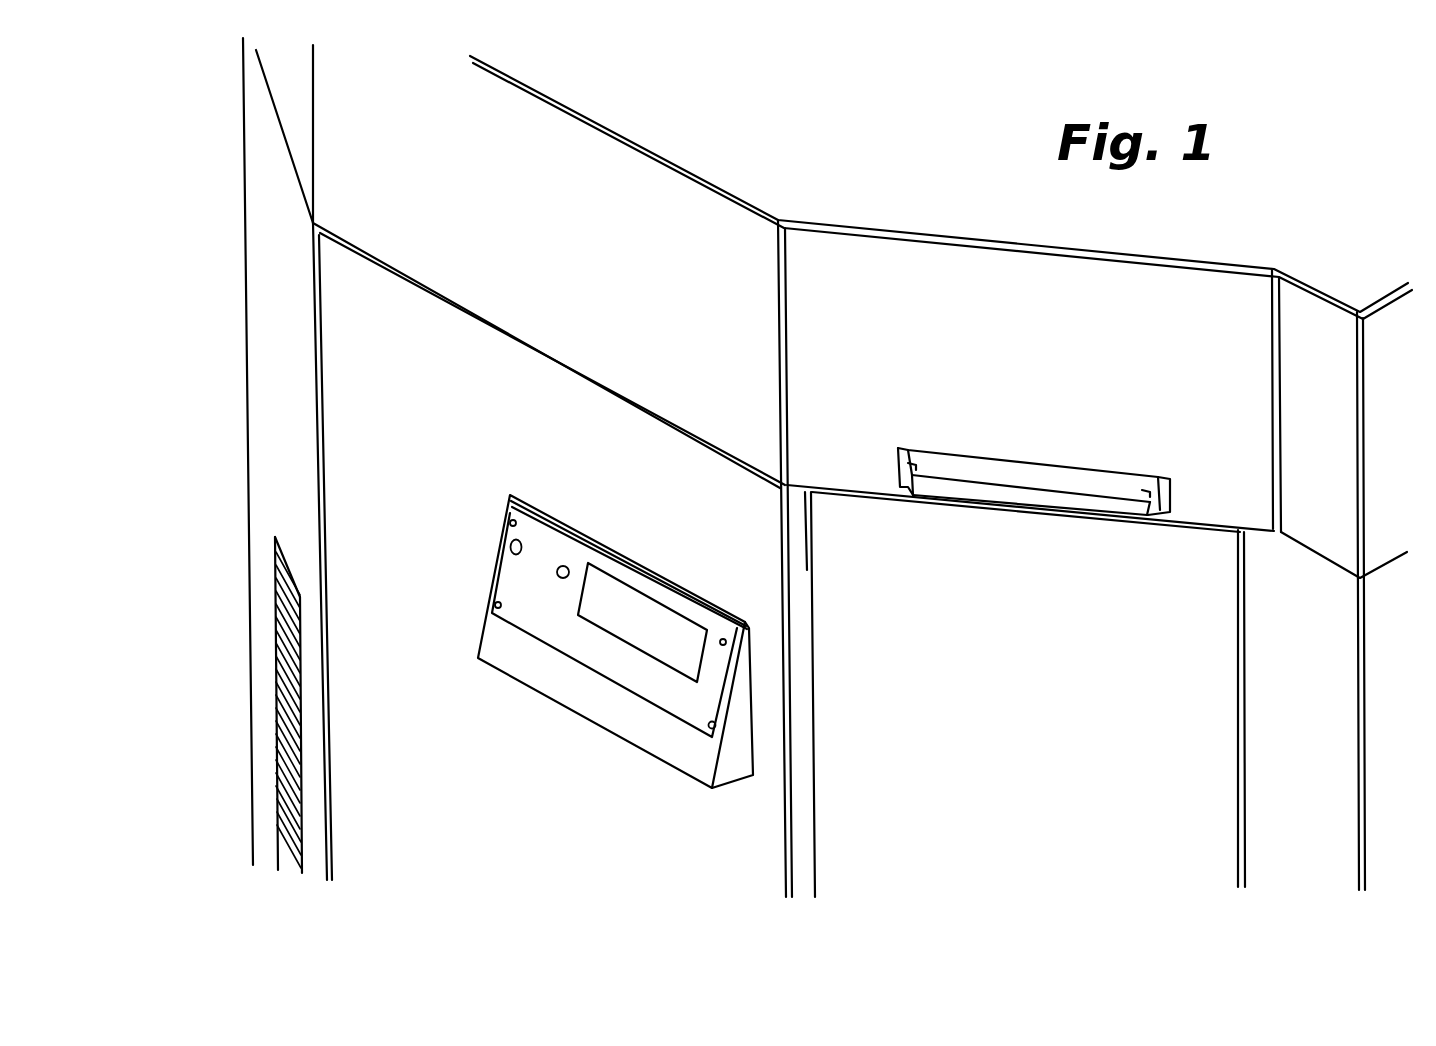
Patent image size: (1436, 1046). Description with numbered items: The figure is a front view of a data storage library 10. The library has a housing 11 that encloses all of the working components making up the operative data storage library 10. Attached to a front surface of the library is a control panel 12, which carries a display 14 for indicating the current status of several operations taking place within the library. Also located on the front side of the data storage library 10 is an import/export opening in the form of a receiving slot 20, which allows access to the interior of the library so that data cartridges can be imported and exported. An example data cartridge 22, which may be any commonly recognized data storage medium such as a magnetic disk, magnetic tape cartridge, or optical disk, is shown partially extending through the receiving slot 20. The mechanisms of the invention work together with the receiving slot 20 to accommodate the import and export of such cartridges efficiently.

The data storage library 10 is at (657, 297).
The housing 11 is at (718, 218).
The control panel 12 is at (574, 715).
The display 14 is at (620, 598).
The receiving slot 20 is at (1167, 477).
The data cartridge 22 is at (1025, 470).